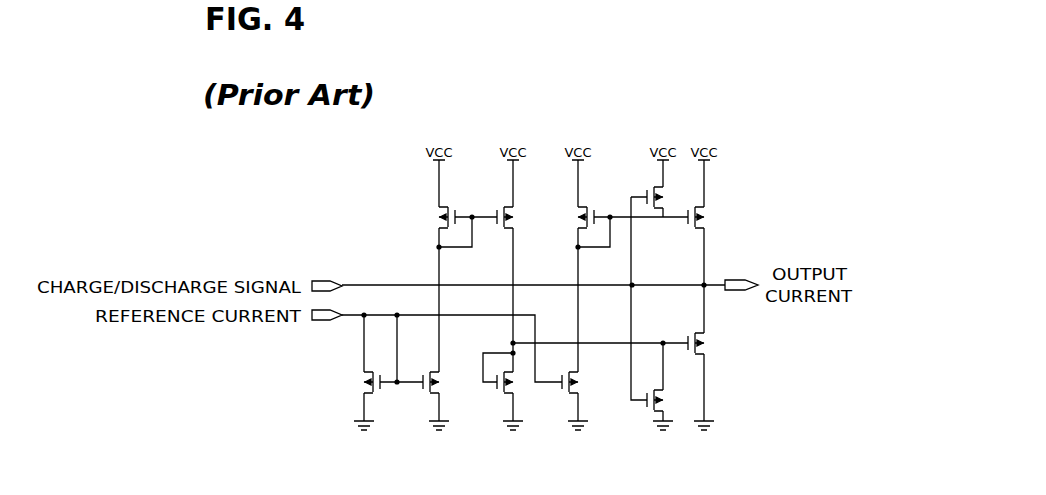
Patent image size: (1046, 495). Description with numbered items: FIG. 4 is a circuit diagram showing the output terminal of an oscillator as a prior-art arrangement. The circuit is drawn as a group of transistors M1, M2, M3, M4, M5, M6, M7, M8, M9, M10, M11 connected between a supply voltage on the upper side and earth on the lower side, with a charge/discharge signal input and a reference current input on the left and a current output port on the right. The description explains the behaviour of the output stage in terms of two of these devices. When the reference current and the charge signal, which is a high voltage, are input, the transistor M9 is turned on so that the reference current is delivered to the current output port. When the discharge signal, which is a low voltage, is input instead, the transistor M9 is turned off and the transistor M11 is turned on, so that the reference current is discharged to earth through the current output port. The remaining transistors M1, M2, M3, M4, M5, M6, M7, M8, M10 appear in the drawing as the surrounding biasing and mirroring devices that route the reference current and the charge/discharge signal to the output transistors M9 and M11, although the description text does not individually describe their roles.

The transistor M1 is at (380, 374).
The transistor M2 is at (426, 374).
The transistor M3 is at (455, 210).
The transistor M4 is at (492, 210).
The transistor M5 is at (500, 392).
The transistor M6 is at (563, 392).
The transistor M7 is at (594, 210).
The transistor M8 is at (647, 189).
The transistor M9 is at (657, 227).
The transistor M10 is at (639, 406).
The transistor M11 is at (689, 337).